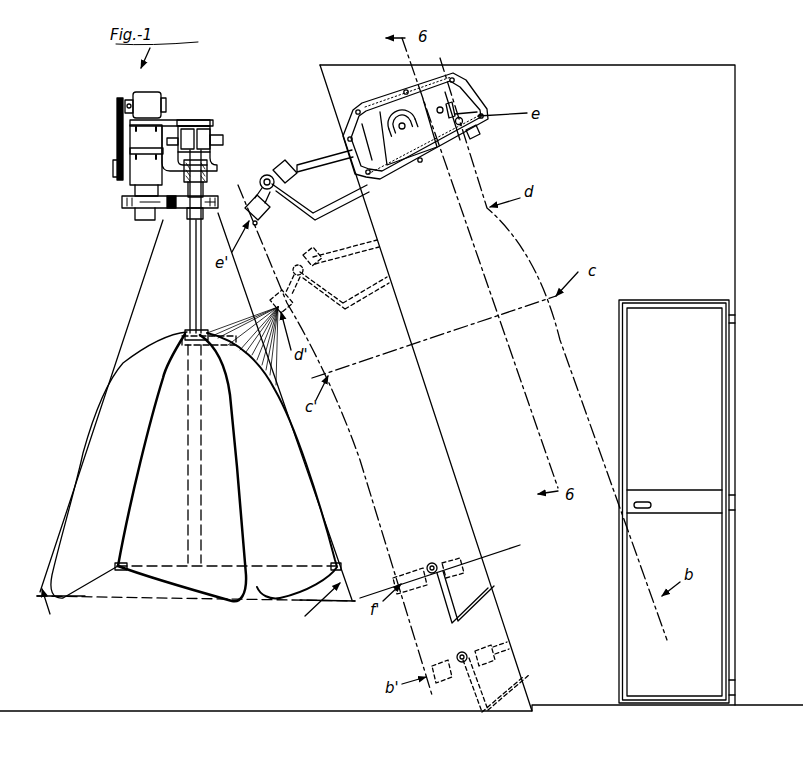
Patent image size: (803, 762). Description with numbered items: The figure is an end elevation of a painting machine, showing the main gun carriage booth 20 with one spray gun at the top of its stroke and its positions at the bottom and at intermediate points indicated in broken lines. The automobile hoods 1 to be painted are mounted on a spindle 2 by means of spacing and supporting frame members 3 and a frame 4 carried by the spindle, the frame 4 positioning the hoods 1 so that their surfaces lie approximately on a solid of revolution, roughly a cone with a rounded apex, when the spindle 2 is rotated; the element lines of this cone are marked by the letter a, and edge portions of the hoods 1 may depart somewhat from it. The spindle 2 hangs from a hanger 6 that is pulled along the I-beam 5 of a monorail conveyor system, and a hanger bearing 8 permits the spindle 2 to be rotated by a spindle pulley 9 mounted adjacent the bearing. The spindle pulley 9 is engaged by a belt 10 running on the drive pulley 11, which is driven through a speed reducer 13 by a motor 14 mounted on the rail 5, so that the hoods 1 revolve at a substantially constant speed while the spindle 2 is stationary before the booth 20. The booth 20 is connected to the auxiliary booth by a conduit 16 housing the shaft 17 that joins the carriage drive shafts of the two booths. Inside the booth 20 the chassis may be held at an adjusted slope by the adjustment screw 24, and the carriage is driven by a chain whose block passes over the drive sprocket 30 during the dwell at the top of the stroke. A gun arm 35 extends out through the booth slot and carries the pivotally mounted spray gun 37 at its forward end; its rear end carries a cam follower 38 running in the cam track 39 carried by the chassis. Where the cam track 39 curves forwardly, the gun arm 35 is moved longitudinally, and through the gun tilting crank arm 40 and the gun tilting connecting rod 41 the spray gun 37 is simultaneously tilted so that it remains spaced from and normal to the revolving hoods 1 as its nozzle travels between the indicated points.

The hoods 1 is at (94, 413).
The spindle 2 is at (190, 288).
The frame member 3 is at (207, 330).
The frame 4 is at (123, 571).
The I-beam 5 is at (196, 142).
The hanger 6 is at (215, 136).
The hanger bearing 8 is at (207, 178).
The spindle pulley 9 is at (205, 210).
The belt 10 is at (171, 209).
The drive pulley 11 is at (130, 209).
The speed reducer 13 is at (143, 171).
The motor 14 is at (142, 93).
The conduit 16 is at (383, 115).
The shaft 17 is at (403, 130).
The main gun carriage booth 20 is at (713, 130).
The adjustment screw 24 is at (462, 109).
The drive sprocket 30 is at (390, 116).
The gun arm 35 is at (322, 162).
The spray gun 37 is at (281, 162).
The cam follower 38 is at (483, 128).
The cam track 39 is at (476, 143).
The gun tilting crank arm 40 is at (270, 214).
The gun tilting connecting rod 41 is at (326, 215).